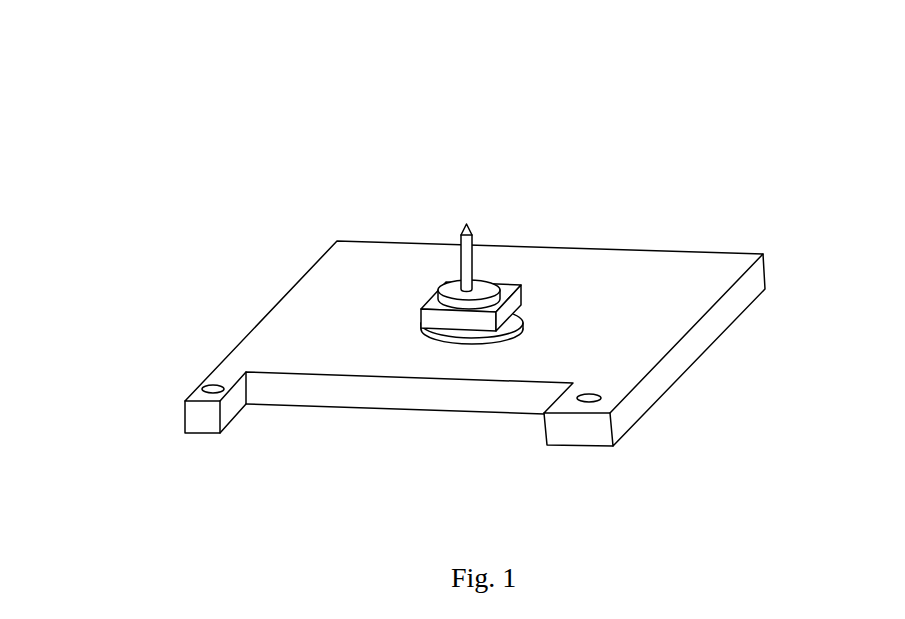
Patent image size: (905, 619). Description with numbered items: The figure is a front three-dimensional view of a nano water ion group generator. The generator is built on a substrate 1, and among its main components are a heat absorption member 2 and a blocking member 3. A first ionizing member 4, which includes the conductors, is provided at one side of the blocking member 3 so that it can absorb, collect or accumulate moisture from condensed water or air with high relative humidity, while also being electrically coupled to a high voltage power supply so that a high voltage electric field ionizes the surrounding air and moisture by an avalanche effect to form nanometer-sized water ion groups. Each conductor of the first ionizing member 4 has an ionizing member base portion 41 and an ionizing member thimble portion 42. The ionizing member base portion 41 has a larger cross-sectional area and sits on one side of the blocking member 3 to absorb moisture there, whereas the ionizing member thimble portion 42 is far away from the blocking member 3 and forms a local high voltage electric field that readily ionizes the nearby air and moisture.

The substrate 1 is at (305, 388).
The heat absorption member 2 is at (465, 333).
The blocking member 3 is at (432, 318).
The first ionizing member 4 is at (302, 154).
The ionizing member base portion 41 is at (453, 287).
The ionizing member thimble portion 42 is at (461, 232).